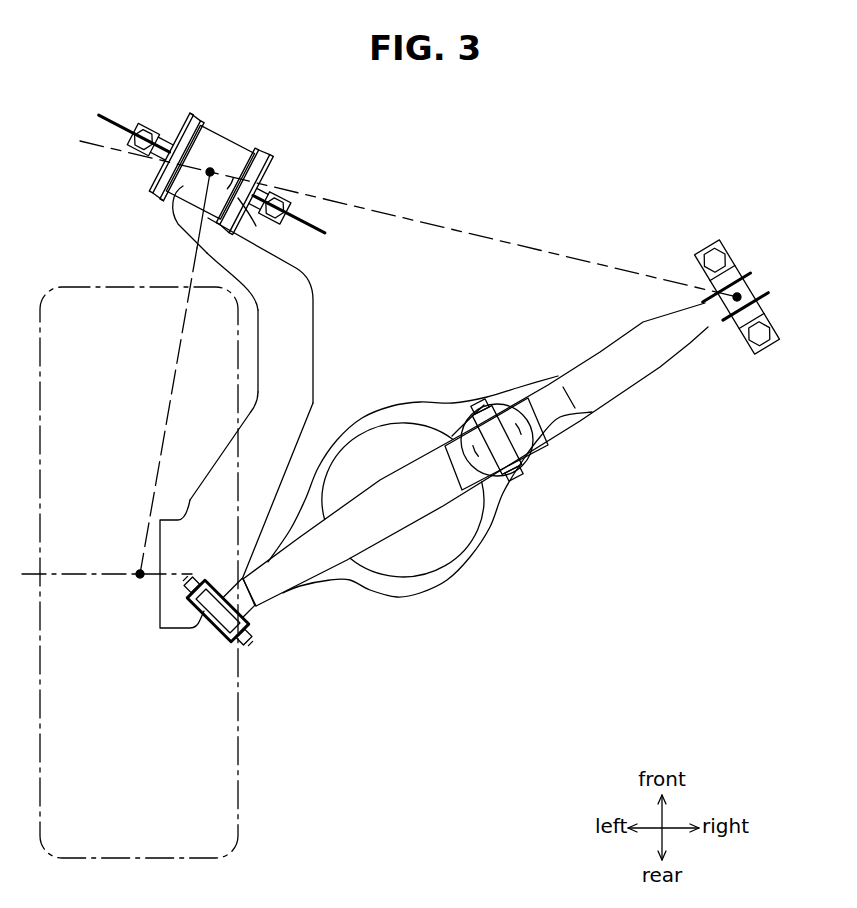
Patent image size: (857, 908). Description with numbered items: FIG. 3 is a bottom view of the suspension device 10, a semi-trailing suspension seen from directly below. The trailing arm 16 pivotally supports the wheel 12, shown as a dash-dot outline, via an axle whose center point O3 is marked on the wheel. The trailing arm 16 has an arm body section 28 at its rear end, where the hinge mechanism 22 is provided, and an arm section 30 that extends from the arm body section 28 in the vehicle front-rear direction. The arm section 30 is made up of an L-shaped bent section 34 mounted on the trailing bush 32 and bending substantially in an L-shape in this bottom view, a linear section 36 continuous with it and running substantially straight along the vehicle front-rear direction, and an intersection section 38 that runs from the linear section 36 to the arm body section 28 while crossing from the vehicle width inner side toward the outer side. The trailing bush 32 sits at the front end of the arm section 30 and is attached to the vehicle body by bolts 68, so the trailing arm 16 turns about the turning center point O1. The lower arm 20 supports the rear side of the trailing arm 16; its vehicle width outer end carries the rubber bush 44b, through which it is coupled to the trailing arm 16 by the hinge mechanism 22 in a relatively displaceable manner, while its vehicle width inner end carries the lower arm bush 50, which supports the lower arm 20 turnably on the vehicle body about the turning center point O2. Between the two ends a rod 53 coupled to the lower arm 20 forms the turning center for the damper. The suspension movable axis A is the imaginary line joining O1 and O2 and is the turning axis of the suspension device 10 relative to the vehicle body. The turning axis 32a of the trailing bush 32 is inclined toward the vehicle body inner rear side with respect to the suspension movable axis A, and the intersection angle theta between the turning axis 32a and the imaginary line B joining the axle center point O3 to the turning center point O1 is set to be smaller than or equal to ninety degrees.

The suspension device 10 is at (580, 142).
The wheel 12 is at (72, 286).
The trailing arm 16 is at (244, 407).
The lower arm 20 is at (500, 548).
The hinge mechanism 22 is at (211, 630).
The arm body section 28 is at (157, 598).
The arm section 30 is at (318, 344).
The trailing bush 32 is at (226, 191).
The turning axis of the trailing bush 32a is at (298, 233).
The L-shaped bent section 34 is at (190, 242).
The linear section 36 is at (258, 355).
The intersection section 38 is at (202, 478).
The rubber bush 44b is at (219, 650).
The lower arm bush 50 is at (760, 278).
The rod 53 is at (519, 478).
The bolt 68 is at (153, 127).
The suspension movable axis A is at (508, 238).
The imaginary line B is at (166, 413).
The turning center point of the trailing arm O1 is at (215, 158).
The turning center point of the lower arm bush O2 is at (735, 305).
The axle center point of the wheel O3 is at (136, 572).